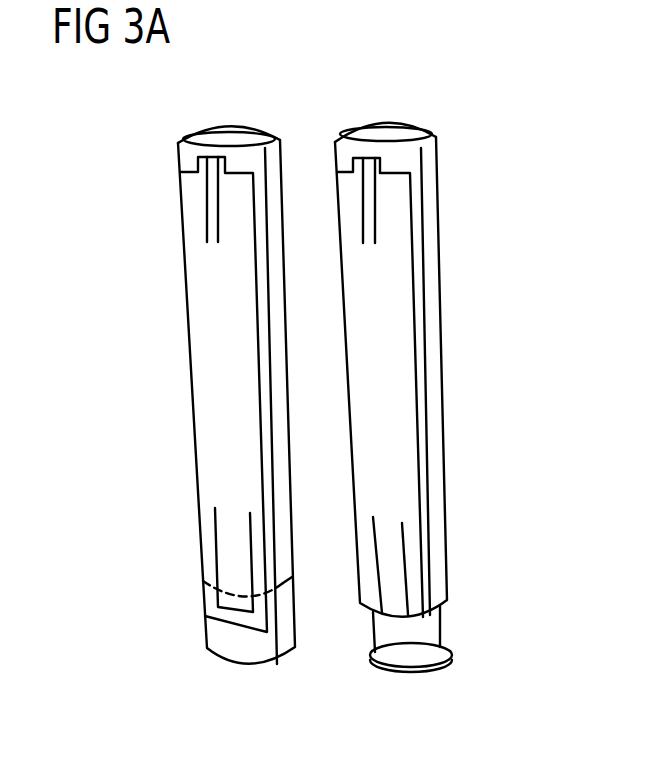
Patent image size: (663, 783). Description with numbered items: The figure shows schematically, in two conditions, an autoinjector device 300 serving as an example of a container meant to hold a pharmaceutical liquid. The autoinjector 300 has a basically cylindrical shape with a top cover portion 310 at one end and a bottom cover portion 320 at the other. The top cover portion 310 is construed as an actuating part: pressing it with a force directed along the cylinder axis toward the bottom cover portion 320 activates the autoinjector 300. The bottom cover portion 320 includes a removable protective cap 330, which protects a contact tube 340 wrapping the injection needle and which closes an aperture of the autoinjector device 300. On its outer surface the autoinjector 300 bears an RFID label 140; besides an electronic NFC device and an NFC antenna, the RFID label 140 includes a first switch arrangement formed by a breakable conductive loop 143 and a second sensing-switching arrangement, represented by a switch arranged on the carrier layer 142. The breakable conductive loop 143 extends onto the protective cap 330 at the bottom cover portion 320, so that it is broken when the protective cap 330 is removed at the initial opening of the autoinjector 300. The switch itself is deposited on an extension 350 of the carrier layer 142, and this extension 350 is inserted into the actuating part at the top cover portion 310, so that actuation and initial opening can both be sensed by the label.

The autoinjector device 300 is at (338, 103).
The top cover portion 310 is at (448, 156).
The bottom cover portion 320 is at (183, 622).
The removable protective cap 330 is at (242, 647).
The contact tube 340 is at (432, 633).
The extension of the carrier layer 350 is at (198, 166).
The RFID label 140 is at (400, 377).
The carrier layer 142 is at (205, 360).
The breakable conductive loop 143 is at (216, 542).